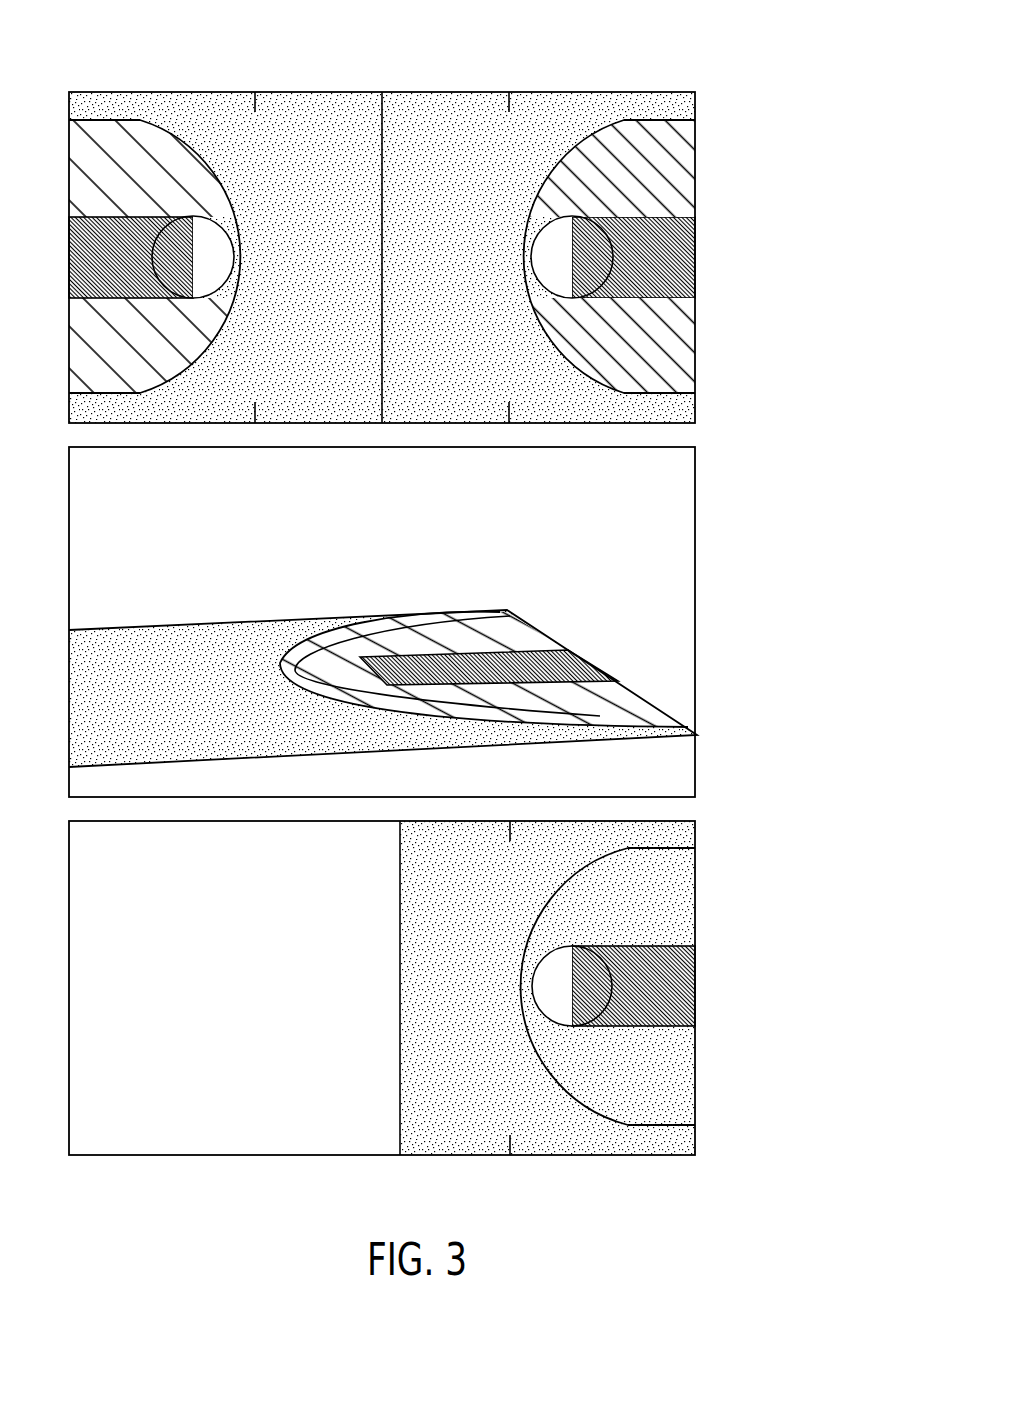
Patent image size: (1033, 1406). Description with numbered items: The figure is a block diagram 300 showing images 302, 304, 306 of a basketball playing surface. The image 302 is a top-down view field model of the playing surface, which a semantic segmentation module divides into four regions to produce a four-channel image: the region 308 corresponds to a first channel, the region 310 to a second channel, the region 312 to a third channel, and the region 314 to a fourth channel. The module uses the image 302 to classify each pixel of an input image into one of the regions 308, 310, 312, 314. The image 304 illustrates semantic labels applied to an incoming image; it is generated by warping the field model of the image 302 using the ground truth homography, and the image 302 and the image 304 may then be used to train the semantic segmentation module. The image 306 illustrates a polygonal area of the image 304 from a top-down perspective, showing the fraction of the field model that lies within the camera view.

The venue map views 300 is at (136, 32).
The image 302 is at (433, 211).
The image 304 is at (696, 505).
The image 306 is at (692, 868).
The region 308 is at (695, 343).
The region 310 is at (690, 258).
The region 312 is at (553, 92).
The region 314 is at (217, 248).